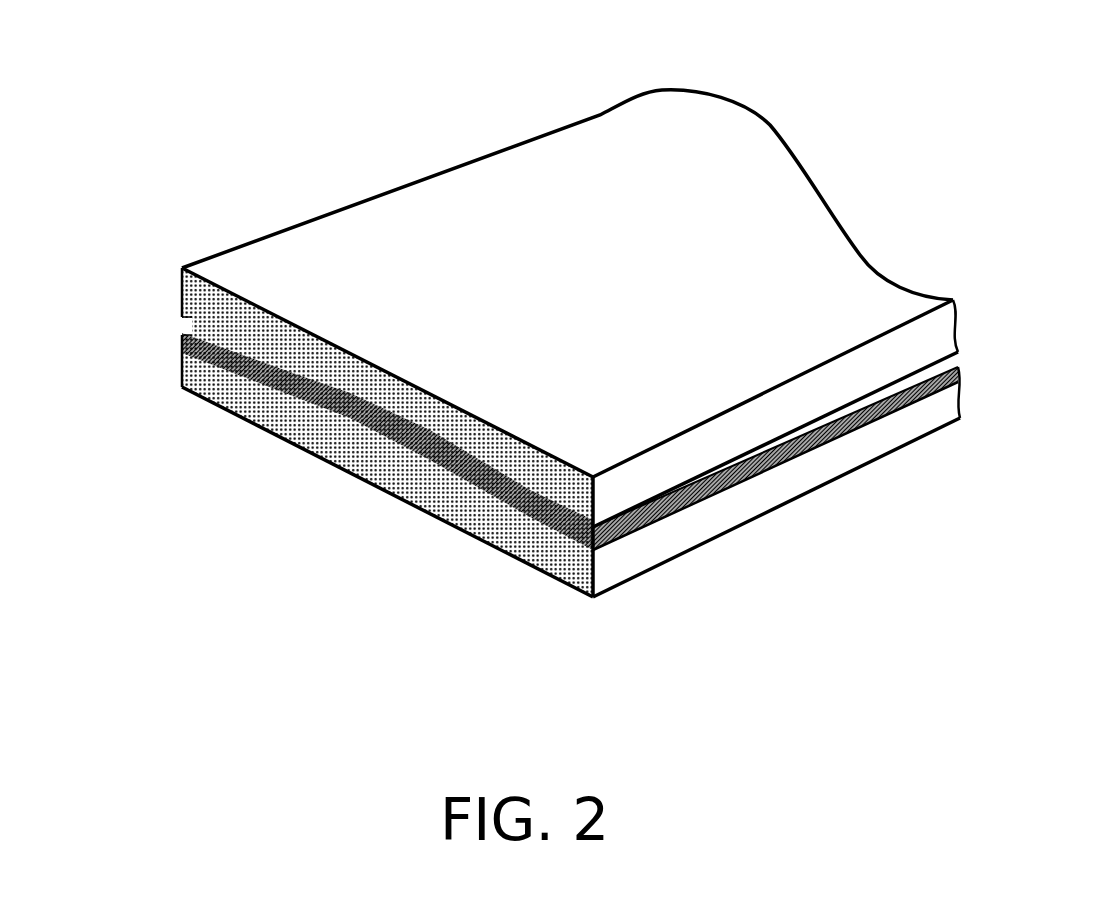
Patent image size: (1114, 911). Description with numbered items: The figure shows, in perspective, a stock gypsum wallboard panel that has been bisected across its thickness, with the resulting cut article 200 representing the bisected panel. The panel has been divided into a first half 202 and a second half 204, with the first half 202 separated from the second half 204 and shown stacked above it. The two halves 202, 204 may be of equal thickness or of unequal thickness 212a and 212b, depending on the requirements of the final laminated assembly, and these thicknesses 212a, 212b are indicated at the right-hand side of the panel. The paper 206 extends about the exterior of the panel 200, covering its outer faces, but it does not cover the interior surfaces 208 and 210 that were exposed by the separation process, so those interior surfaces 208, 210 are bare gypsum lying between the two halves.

The bisected panel 200 is at (302, 130).
The first half 202 is at (627, 327).
The second half 204 is at (663, 537).
The paper 206 is at (227, 281).
The interior surface 208 is at (300, 444).
The interior surface 210 is at (430, 460).
The thickness 212a is at (963, 297).
The thickness 212b is at (963, 368).